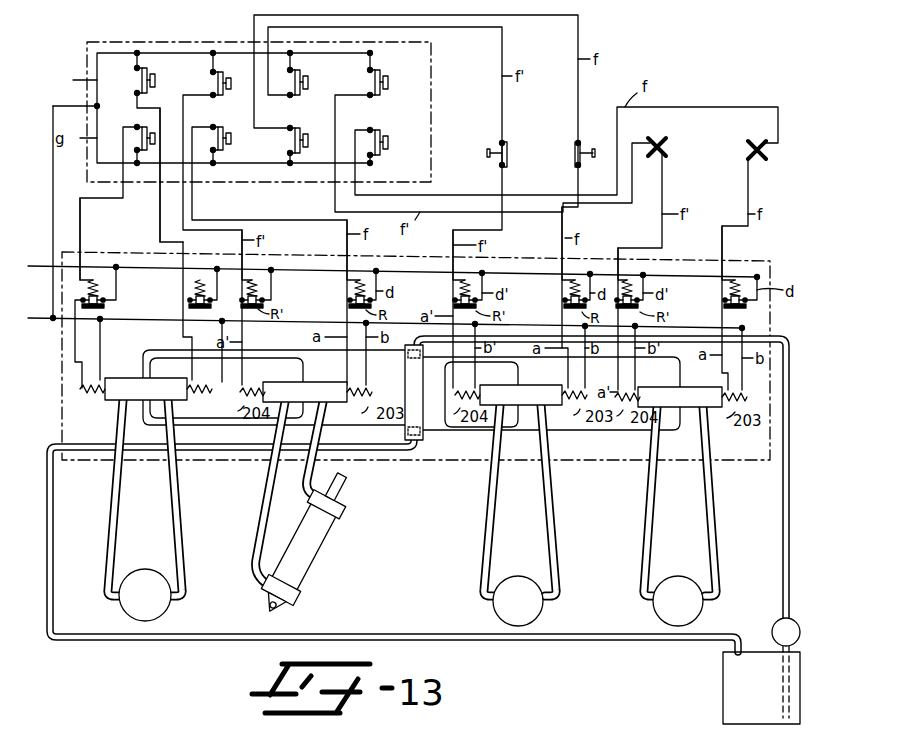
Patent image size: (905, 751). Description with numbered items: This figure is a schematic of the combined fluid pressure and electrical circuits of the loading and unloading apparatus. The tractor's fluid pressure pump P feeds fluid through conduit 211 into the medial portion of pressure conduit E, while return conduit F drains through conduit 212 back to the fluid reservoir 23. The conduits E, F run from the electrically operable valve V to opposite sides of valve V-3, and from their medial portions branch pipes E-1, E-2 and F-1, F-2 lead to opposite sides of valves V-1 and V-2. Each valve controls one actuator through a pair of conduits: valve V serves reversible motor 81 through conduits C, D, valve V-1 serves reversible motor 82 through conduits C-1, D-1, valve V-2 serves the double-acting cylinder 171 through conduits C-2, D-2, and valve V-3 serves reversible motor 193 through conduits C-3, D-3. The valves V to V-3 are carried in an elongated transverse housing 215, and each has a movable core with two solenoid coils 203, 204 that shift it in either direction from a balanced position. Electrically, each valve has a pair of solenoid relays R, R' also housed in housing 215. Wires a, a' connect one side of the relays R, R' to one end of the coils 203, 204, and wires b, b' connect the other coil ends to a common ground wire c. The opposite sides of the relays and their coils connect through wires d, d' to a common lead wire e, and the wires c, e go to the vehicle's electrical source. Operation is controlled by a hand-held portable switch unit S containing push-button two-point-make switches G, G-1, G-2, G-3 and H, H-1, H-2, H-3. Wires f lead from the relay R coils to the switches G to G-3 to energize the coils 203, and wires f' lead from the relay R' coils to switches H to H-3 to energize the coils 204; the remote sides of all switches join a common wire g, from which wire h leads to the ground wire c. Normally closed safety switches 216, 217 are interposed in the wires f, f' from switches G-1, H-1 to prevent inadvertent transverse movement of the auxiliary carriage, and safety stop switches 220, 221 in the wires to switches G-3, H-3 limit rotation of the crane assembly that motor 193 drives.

The fluid reservoir 23 is at (723, 701).
The reversible motor 81 is at (148, 569).
The reversible motor 82 is at (516, 576).
The double-acting cylinder 171 is at (320, 553).
The reversible motor 193 is at (677, 576).
The solenoid coil 203 is at (196, 404).
The solenoid coil 204 is at (84, 404).
The pipe or conduit 211 is at (792, 333).
The pipe or conduit 212 is at (54, 494).
The elongated transverse housing 215 is at (62, 412).
The normally closed safety switch 216 is at (573, 141).
The normally closed safety switch 217 is at (511, 154).
The safety stop switch 220 is at (752, 141).
The safety stop switch 221 is at (688, 129).
The portable switch unit S is at (156, 38).
The push-button two-point-make switch G is at (155, 80).
The push-button two-point-make switch H is at (155, 138).
The push-button two-point-make switch G-1 is at (305, 133).
The push-button two-point-make switch G-2 is at (231, 150).
The push-button two-point-make switch G-3 is at (385, 152).
The push-button two-point-make switch H-1 is at (308, 82).
The push-button two-point-make switch H-2 is at (232, 106).
The push-button two-point-make switch H-3 is at (382, 70).
The electrically operable valve mechanism V is at (125, 376).
The electrically operable valve mechanism V-1 is at (517, 382).
The electrically operable valve mechanism V-2 is at (303, 380).
The electrically operable valve mechanism V-3 is at (677, 382).
The pipe or conduit E is at (402, 360).
The pipe or conduit F is at (424, 447).
The branch pipe E-1 is at (522, 374).
The branch pipe E-2 is at (305, 373).
The branch pipe F-1 is at (522, 418).
The branch pipe F-2 is at (306, 415).
The pipe or conduit C is at (115, 510).
The pipe or conduit D is at (178, 510).
The pipe or conduit C-1 is at (492, 512).
The pipe or conduit D-1 is at (553, 512).
The pipe or conduit C-2 is at (268, 496).
The pipe or conduit D-2 is at (305, 498).
The pipe or conduit C-3 is at (652, 512).
The pipe or conduit D-3 is at (716, 497).
The fluid pressure pump P is at (786, 632).
The common lead wire e is at (298, 282).
The wire or conductor h is at (53, 187).
The common wire or conductor g is at (76, 81).
The wire or conductor a is at (175, 311).
The wire or conductor a' is at (62, 344).
The wire or conductor b is at (218, 351).
The wire or conductor b' is at (114, 349).
The common ground wire c is at (270, 333).
The wire or conductor d is at (210, 288).
The wire or conductor d' is at (111, 287).
The solenoid relay R is at (173, 313).
The solenoid relay R' is at (113, 314).
The wire or conductor f is at (161, 175).
The wire or conductor f' is at (90, 239).